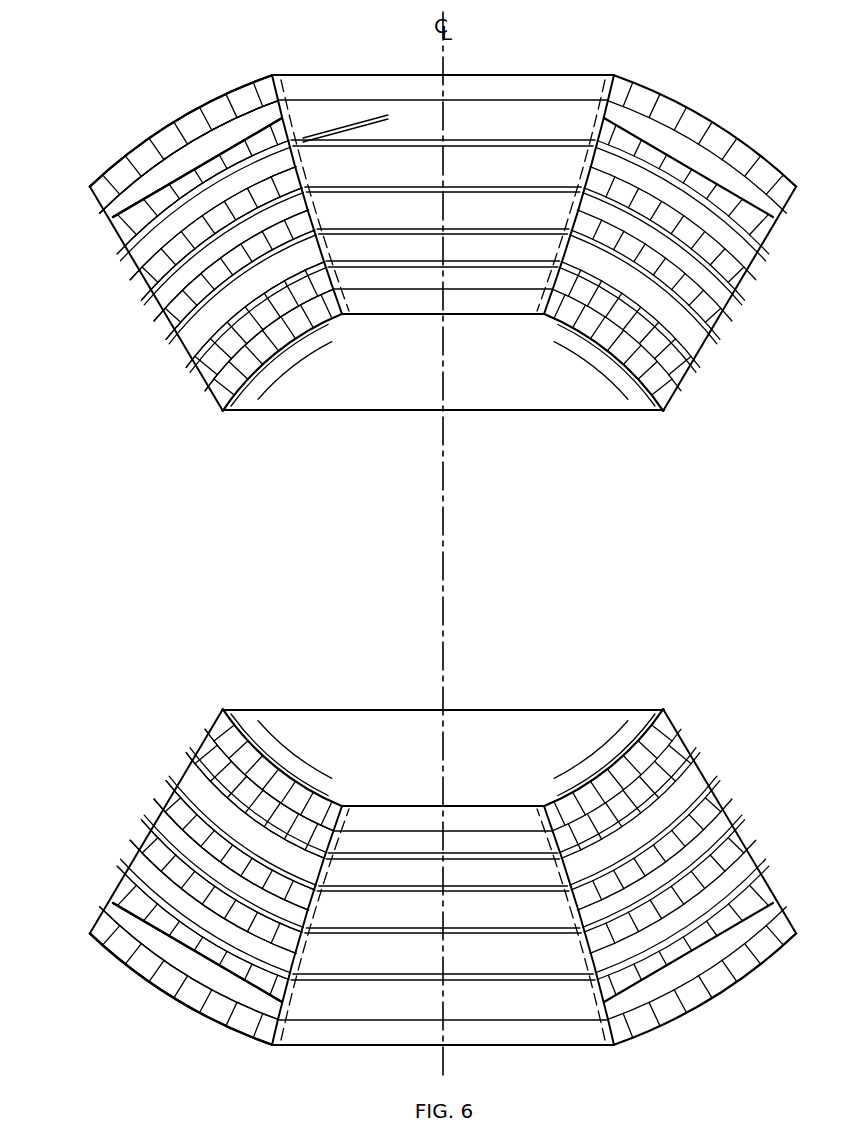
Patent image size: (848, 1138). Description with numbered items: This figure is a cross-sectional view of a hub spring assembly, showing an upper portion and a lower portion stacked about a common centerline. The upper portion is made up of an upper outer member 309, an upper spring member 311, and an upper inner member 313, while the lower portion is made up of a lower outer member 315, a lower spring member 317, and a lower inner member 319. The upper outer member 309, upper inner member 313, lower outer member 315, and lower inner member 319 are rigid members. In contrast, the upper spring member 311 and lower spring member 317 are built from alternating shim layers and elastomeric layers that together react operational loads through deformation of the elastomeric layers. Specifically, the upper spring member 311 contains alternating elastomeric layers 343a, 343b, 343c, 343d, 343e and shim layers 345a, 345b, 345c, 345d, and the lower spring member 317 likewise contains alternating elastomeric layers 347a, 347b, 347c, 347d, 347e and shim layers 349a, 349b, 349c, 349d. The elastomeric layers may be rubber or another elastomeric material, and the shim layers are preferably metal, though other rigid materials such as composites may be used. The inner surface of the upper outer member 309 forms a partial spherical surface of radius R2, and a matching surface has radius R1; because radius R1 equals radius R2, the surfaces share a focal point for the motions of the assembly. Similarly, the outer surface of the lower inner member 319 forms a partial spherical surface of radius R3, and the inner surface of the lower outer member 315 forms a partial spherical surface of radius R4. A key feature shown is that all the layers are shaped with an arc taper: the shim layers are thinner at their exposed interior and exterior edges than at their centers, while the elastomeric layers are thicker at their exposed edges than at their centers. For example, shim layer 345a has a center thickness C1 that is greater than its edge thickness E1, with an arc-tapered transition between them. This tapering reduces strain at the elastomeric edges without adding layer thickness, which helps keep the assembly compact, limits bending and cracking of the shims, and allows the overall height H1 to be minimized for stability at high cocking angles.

The upper outer member 309 is at (92, 200).
The upper spring member 311 is at (176, 71).
The upper inner member 313 is at (232, 413).
The lower outer member 315 is at (90, 927).
The lower spring member 317 is at (159, 1016).
The lower inner member 319 is at (203, 735).
The elastomeric layer 343a is at (115, 233).
The elastomeric layer 343b is at (143, 275).
The elastomeric layer 343c is at (173, 320).
The elastomeric layer 343d is at (197, 367).
The elastomeric layer 343e is at (215, 418).
The shim layer 345a is at (128, 254).
The shim layer 345b is at (163, 305).
The shim layer 345c is at (187, 343).
The shim layer 345d is at (203, 393).
The elastomeric layer 347a is at (201, 742).
The elastomeric layer 347b is at (181, 783).
The elastomeric layer 347c is at (160, 817).
The elastomeric layer 347d is at (143, 845).
The elastomeric layer 347e is at (116, 889).
The shim layer 349a is at (191, 759).
The shim layer 349b is at (171, 800).
The shim layer 349c is at (150, 831).
The shim layer 349d is at (130, 862).
The center thickness C1 is at (221, 219).
The edge thickness E1 is at (388, 153).
The height H1 is at (630, 75).
The radius R1 is at (655, 369).
The radius R2 is at (718, 163).
The radius R3 is at (443, 561).
The radius R4 is at (443, 561).